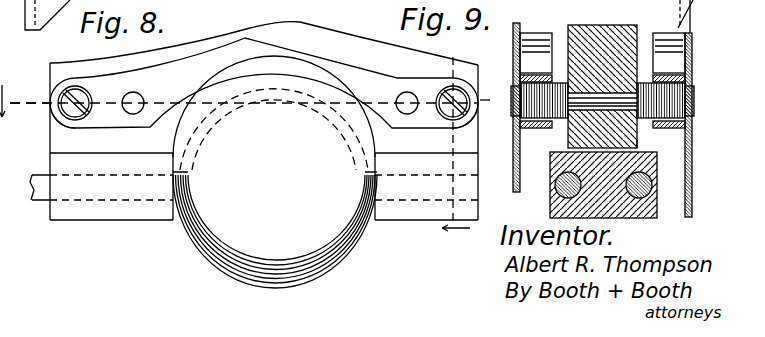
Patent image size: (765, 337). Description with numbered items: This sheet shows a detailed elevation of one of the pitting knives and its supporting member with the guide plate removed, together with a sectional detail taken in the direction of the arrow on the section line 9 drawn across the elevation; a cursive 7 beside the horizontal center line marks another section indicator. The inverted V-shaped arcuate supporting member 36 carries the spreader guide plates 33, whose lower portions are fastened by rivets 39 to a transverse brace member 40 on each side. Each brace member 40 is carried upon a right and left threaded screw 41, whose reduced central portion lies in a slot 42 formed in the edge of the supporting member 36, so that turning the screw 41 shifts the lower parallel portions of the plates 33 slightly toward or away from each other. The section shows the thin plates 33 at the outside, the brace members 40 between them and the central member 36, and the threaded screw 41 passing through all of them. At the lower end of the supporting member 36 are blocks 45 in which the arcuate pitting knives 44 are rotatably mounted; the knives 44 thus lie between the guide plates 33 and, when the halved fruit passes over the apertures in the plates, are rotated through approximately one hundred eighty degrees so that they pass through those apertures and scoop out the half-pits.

In FIG. 8, the section line 7- 7 is at (216, 105).
In FIG. 9, the section line 7- 7 is at (487, 105).
In FIG. 8, the section line 9— 9 is at (456, 144).
In FIG. 9, the spreader guide plate 33 is at (513, 40).
In FIG. 8, the supporting member 36 is at (370, 18).
In FIG. 9, the supporting member 36 is at (617, 48).
In FIG. 8, the rivet 39 is at (136, 103).
In FIG. 8, the transverse brace member 40 is at (264, 83).
In FIG. 9, the transverse brace member 40 is at (530, 58).
In FIG. 8, the right and left threaded screw 41 is at (58, 96).
In FIG. 9, the right and left threaded screw 41 is at (667, 98).
In FIG. 8, the slot 42 is at (58, 117).
In FIG. 9, the slot 42 is at (637, 140).
In FIG. 8, the pitting knife 44 is at (318, 266).
In FIG. 9, the pitting knife 44 is at (563, 185).
In FIG. 8, the block 45 is at (131, 212).
In FIG. 9, the block 45 is at (603, 185).